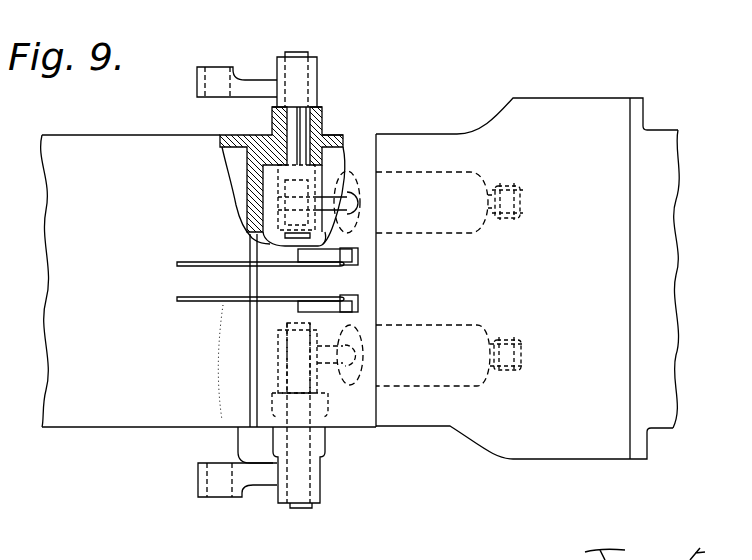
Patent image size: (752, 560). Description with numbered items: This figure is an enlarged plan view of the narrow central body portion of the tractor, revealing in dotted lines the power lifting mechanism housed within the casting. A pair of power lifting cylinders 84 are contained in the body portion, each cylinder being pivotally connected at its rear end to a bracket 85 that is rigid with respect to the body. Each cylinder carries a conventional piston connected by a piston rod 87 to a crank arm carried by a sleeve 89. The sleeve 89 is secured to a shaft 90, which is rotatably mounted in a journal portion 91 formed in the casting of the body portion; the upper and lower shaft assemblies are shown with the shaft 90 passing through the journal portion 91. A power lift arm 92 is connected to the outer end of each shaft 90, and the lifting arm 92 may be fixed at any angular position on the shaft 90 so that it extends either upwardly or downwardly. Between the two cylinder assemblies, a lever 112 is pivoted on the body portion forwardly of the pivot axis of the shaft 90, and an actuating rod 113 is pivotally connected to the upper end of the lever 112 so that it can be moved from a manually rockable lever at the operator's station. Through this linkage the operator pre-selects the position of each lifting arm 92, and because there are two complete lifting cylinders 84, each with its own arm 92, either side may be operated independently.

The power lifting cylinder 84 is at (413, 180).
The bracket 85 is at (518, 187).
The piston rod 87 is at (337, 147).
The sleeve 89 is at (282, 187).
The shaft 90 is at (297, 52).
The journal portion 91 is at (322, 108).
The power lift arm 92 is at (250, 80).
The lever 112 is at (362, 300).
The actuating rod 113 is at (180, 292).